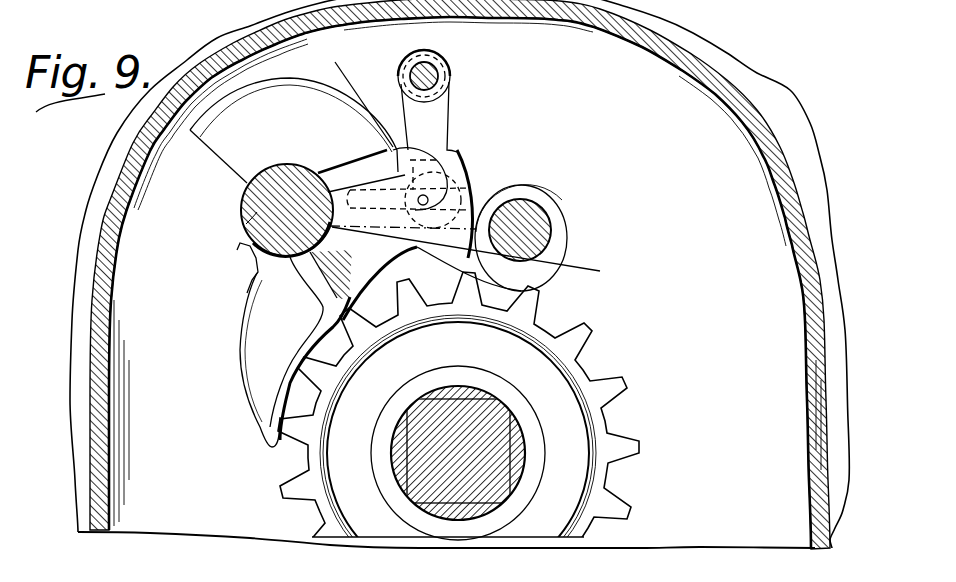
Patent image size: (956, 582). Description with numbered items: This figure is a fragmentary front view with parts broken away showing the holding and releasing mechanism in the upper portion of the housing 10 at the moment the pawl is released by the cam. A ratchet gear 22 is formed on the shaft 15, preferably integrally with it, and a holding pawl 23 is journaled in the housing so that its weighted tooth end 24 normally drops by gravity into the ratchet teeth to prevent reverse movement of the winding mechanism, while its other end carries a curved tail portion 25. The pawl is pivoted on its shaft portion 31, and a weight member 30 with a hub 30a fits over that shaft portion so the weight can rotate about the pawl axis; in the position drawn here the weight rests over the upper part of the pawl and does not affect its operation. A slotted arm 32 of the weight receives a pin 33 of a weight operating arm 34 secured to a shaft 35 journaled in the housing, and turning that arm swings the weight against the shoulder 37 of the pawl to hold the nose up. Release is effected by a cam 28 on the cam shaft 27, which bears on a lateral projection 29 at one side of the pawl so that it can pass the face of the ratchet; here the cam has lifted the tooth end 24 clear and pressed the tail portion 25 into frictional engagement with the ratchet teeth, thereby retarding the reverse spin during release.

The casing wall 10 is at (95, 538).
The shaft 15 is at (442, 505).
The ratchet gear 22 is at (586, 328).
The holding pawl 23 is at (335, 62).
The weighted end of the pawl 24 is at (483, 219).
The tail portion 25 is at (266, 443).
The cam shaft 27 is at (549, 212).
The cam 28 is at (495, 190).
The projection 29 is at (490, 182).
The weight member 30 is at (290, 103).
The hub 30a is at (241, 223).
The shaft portion of the pawl 31 is at (242, 197).
The slotted arm 32 is at (460, 172).
The pin 33 is at (455, 140).
The weight operating arm 34 is at (450, 128).
The shaft 35 is at (440, 70).
The shoulder 37 is at (243, 250).